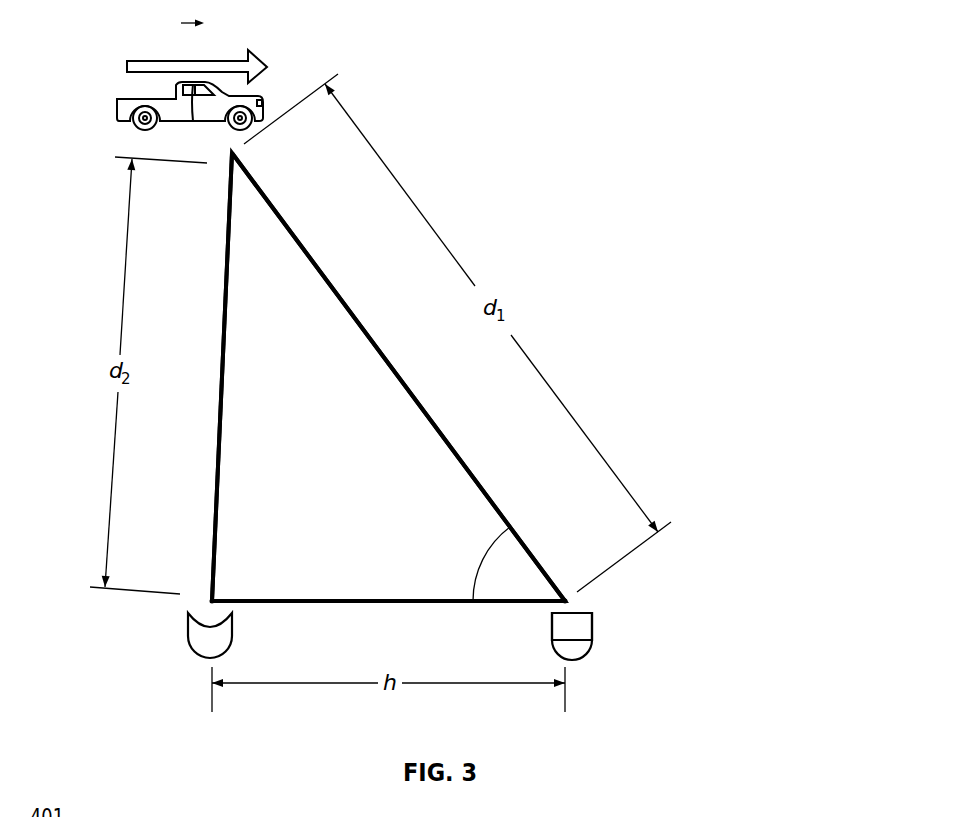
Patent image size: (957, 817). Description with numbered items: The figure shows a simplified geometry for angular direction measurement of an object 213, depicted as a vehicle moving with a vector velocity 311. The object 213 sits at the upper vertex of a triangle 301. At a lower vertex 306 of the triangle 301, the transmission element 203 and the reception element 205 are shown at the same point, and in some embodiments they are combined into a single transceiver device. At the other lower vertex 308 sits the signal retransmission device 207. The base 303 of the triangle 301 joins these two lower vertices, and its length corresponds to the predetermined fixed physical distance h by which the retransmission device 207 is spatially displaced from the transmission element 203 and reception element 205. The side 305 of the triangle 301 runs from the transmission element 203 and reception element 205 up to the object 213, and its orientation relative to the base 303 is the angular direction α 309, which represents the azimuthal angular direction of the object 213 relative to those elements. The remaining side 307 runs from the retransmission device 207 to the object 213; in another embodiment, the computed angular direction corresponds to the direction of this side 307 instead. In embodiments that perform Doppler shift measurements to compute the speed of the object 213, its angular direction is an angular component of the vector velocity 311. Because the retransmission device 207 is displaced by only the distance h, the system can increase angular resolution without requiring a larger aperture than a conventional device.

The triangle 301 is at (321, 389).
The base 303 is at (403, 603).
The side 305 is at (488, 492).
The side 307 is at (221, 363).
The vertex 306 is at (572, 593).
The vertex 308 is at (208, 600).
The angular direction α 309 is at (493, 538).
The transmission element 203 is at (573, 648).
The reception element 205 is at (573, 625).
The signal retransmission device 207 is at (188, 635).
The object 213 is at (173, 122).
The vector velocity 311 is at (162, 60).